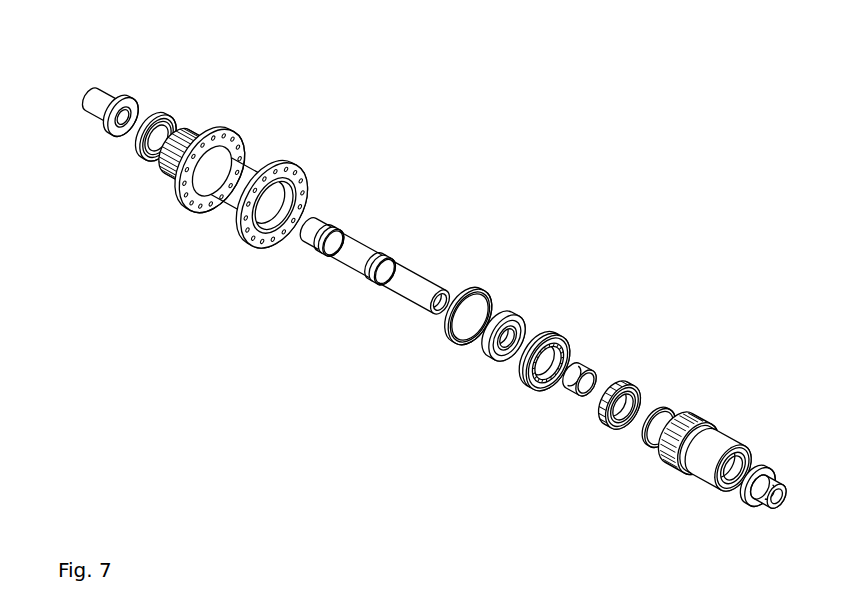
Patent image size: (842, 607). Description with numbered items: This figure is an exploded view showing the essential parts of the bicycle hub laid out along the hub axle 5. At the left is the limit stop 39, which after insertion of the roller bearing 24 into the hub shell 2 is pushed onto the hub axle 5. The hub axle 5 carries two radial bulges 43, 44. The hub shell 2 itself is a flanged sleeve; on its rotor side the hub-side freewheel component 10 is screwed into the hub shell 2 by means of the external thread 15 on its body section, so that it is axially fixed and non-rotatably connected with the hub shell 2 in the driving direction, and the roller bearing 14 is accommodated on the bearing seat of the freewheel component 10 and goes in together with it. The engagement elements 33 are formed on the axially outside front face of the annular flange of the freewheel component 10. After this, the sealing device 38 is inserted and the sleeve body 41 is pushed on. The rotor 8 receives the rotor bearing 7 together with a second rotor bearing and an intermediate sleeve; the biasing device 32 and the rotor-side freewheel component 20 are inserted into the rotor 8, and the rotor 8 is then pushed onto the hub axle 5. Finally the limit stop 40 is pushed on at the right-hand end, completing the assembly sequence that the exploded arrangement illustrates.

The hub shell 2 is at (243, 167).
The hub axle 5 is at (360, 246).
The rotor bearing 7 is at (745, 456).
The rotor 8 is at (726, 437).
The hub-side freewheel component 10 is at (575, 338).
The roller bearing 14 is at (520, 322).
The external thread 15 is at (525, 370).
The rotor-side freewheel component 20 is at (634, 388).
The roller bearing 24 is at (158, 118).
The biasing device 32 is at (645, 445).
The engagement elements 33 is at (548, 382).
The sealing device 38 is at (478, 294).
The limit stop 39 is at (102, 98).
The limit stop 40 is at (770, 485).
The sleeve body 41 is at (593, 378).
The radial bulge 43 is at (340, 218).
The radial bulge 44 is at (397, 249).